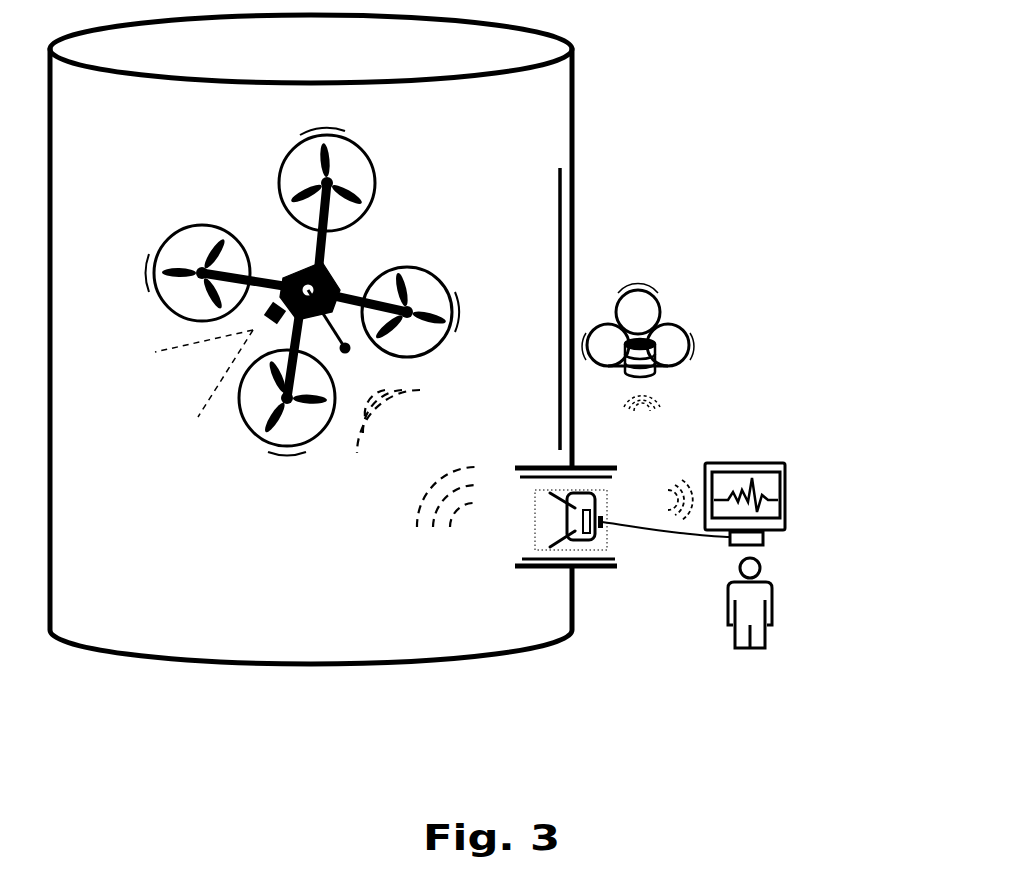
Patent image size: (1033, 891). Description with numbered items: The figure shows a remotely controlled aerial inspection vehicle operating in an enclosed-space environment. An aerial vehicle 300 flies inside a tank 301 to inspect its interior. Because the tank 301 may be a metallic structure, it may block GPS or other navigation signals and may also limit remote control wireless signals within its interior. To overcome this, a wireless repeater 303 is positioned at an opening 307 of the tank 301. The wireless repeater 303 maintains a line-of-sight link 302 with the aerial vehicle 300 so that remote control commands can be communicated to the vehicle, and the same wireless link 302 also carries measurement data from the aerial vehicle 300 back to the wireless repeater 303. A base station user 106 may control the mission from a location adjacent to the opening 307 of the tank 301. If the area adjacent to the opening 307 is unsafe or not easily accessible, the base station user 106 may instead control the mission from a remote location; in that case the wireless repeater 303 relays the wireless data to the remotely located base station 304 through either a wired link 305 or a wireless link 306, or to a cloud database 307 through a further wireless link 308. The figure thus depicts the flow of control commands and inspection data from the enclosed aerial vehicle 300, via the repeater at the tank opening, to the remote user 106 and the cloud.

The base station user 106 is at (788, 607).
The aerial vehicle 300 is at (237, 452).
The tank 301 is at (592, 162).
The line-of-sight link 302 is at (392, 488).
The wireless repeater 303 is at (530, 528).
The remotely located base station 304 is at (790, 432).
The wired link 305 is at (645, 560).
The wireless link 306 is at (682, 472).
The opening of the tank 307 is at (542, 460).
The wireless link 308 is at (673, 401).